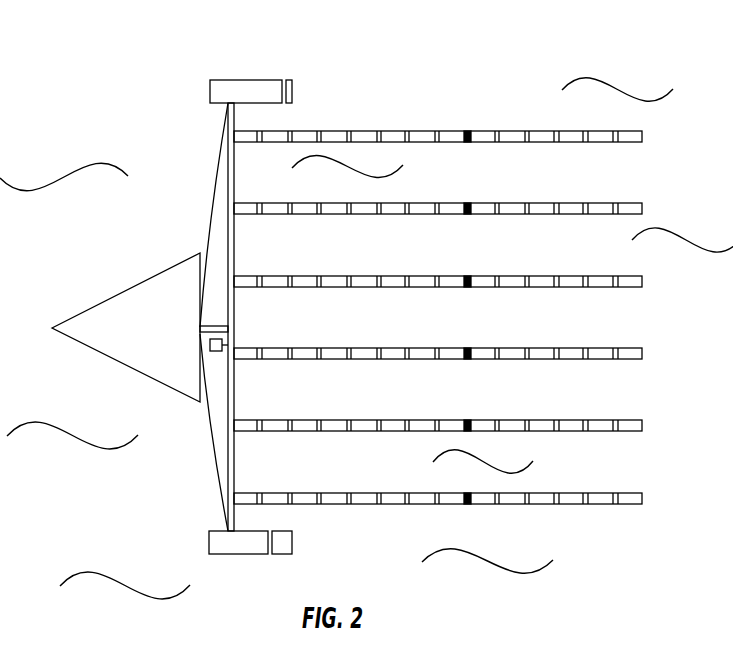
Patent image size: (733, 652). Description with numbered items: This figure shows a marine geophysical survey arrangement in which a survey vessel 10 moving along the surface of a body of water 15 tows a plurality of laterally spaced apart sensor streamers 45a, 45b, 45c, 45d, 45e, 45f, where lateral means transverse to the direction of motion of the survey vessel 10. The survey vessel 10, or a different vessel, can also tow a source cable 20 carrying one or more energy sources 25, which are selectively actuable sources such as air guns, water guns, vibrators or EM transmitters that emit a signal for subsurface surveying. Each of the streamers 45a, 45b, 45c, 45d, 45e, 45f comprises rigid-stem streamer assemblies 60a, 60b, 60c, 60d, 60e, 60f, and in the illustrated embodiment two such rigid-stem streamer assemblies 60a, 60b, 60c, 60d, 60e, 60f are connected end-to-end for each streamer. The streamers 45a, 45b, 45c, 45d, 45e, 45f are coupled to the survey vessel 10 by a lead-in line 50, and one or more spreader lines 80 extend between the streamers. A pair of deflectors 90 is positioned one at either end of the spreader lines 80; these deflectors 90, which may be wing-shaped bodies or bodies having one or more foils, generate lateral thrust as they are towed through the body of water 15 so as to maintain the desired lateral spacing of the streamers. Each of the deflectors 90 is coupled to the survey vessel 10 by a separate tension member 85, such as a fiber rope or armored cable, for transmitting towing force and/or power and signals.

The survey vessel 10 is at (126, 290).
The body of water 15 is at (518, 56).
The source cable 20 is at (210, 340).
The energy sources 25 is at (222, 348).
The sensor streamer 45a is at (473, 118).
The sensor streamer 45b is at (538, 188).
The sensor streamer 45c is at (538, 261).
The sensor streamer 45d is at (538, 333).
The sensor streamer 45e is at (538, 405).
The sensor streamer 45f is at (540, 483).
The lead-in line 50 is at (213, 327).
The rigid-stem streamer assembly 60a is at (393, 131).
The rigid-stem streamer assembly 60b is at (393, 203).
The rigid-stem streamer assembly 60c is at (393, 276).
The rigid-stem streamer assembly 60d is at (393, 348).
The rigid-stem streamer assembly 60e is at (393, 420).
The rigid-stem streamer assembly 60f is at (395, 504).
The spreader lines 80 is at (235, 233).
The tension member 85 is at (213, 217).
The deflectors 90 is at (246, 80).